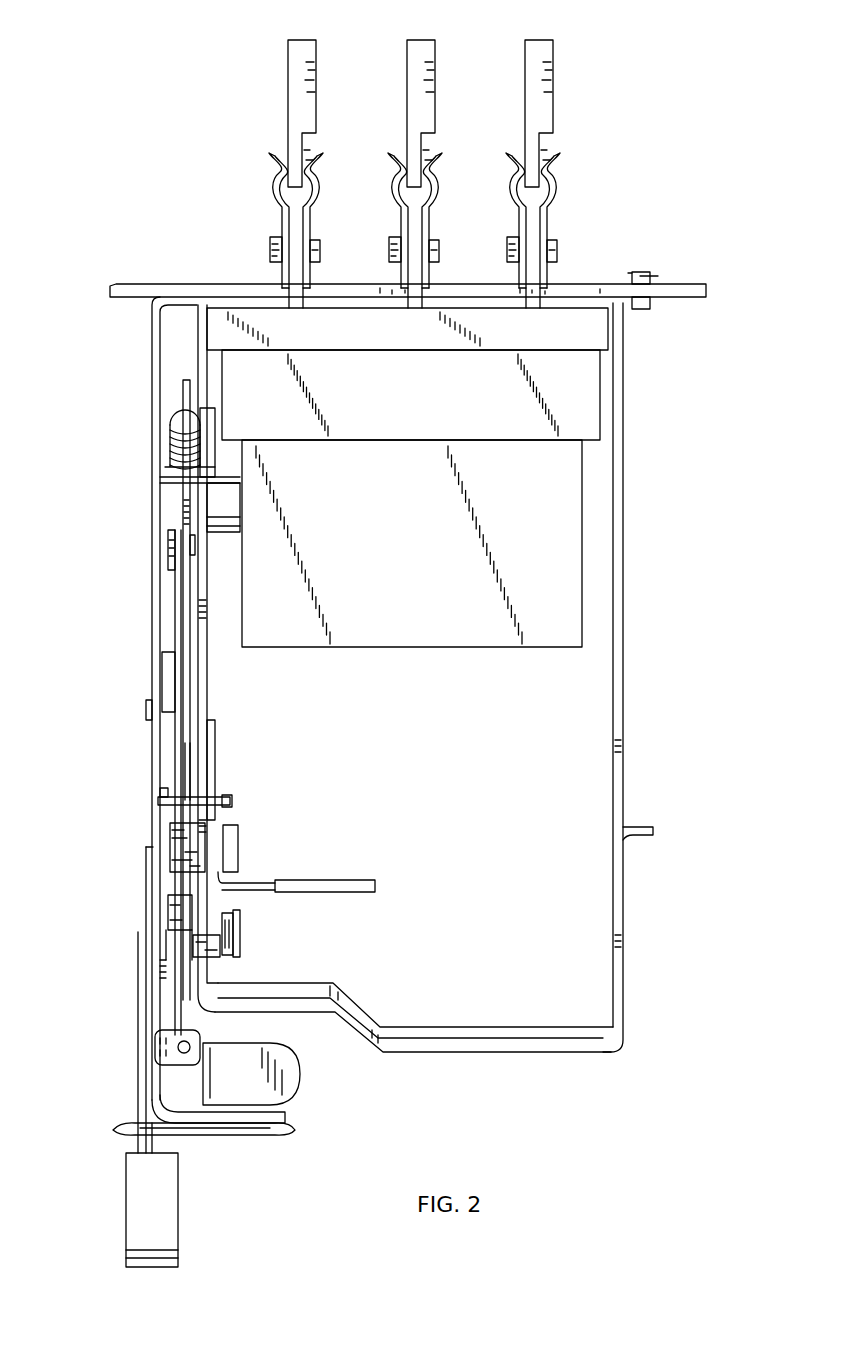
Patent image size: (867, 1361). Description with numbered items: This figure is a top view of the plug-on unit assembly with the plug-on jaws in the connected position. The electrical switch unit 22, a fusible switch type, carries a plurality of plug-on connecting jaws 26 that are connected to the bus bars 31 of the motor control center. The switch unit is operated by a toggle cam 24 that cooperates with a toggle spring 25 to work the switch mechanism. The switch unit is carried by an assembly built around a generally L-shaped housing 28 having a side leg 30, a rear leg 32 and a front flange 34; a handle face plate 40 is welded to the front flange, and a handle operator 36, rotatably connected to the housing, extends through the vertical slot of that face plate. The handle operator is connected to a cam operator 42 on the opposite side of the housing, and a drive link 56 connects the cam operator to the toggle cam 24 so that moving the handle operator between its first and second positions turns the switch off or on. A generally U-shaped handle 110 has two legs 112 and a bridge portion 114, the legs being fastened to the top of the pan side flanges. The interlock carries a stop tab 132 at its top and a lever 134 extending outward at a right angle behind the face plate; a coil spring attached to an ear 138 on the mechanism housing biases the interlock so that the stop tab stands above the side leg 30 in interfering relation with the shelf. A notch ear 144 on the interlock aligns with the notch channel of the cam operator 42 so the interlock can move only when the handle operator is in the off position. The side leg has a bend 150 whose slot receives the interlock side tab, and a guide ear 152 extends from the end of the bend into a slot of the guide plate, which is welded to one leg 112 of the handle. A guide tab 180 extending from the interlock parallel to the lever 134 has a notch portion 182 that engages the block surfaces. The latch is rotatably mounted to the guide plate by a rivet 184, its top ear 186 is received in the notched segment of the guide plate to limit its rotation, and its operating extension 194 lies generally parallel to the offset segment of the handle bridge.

The electrical switch unit 22 is at (408, 568).
The toggle cam 24 is at (220, 503).
The toggle spring 25 is at (170, 425).
The plug-on connecting jaws 26 is at (312, 232).
The L-shaped housing 28 is at (173, 725).
The side leg 30 is at (155, 535).
The bus bars 31 is at (289, 143).
The rear leg 32 is at (262, 295).
The front flange 34 is at (285, 1121).
The handle operator 36 is at (148, 866).
The handle face plate 40 is at (283, 1138).
The cam operator 42 is at (215, 752).
The drive link 56 is at (178, 632).
The U-shaped handle 110 is at (407, 725).
The legs 112 is at (625, 678).
The bridge portion 114 is at (470, 1053).
The stop tab 132 is at (165, 926).
The lever 134 is at (256, 1088).
The ear 138 is at (178, 1058).
The notch ear 144 is at (172, 903).
The bend 150 is at (185, 797).
The guide ear 152 is at (232, 800).
The guide tab 180 is at (240, 851).
The notch portion 182 is at (203, 838).
The rivet 184 is at (242, 928).
The top ear 186 is at (195, 949).
The operating extension 194 is at (283, 883).